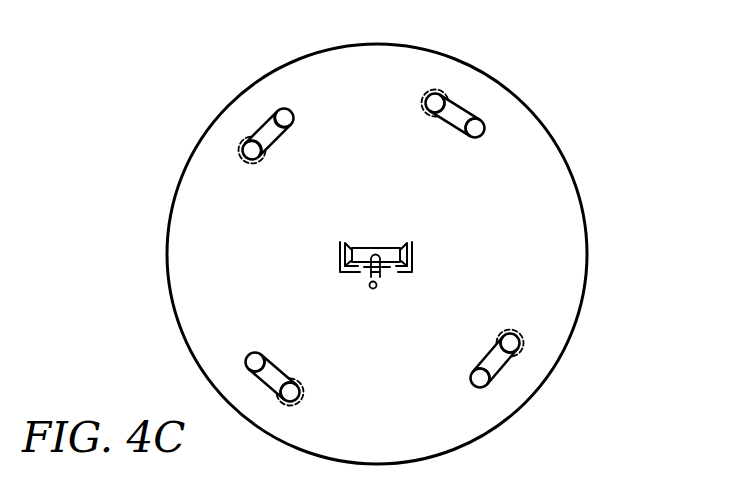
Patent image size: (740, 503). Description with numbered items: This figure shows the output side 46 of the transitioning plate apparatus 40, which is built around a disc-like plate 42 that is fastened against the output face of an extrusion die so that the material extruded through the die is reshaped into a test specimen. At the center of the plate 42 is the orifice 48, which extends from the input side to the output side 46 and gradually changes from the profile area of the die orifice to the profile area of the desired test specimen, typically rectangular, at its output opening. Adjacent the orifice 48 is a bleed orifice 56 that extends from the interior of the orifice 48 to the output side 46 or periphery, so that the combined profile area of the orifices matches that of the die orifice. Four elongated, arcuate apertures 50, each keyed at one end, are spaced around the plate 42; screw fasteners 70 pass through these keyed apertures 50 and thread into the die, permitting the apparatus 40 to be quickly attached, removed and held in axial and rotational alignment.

The transitioning plate apparatus 40 is at (227, 66).
The disc-like plate 42 is at (513, 91).
The output side 46 is at (413, 85).
The orifice 48 is at (413, 262).
The elongated, arcuate apertures 50 is at (290, 128).
The bleed orifice 56 is at (376, 288).
The screw fasteners 70 is at (252, 163).